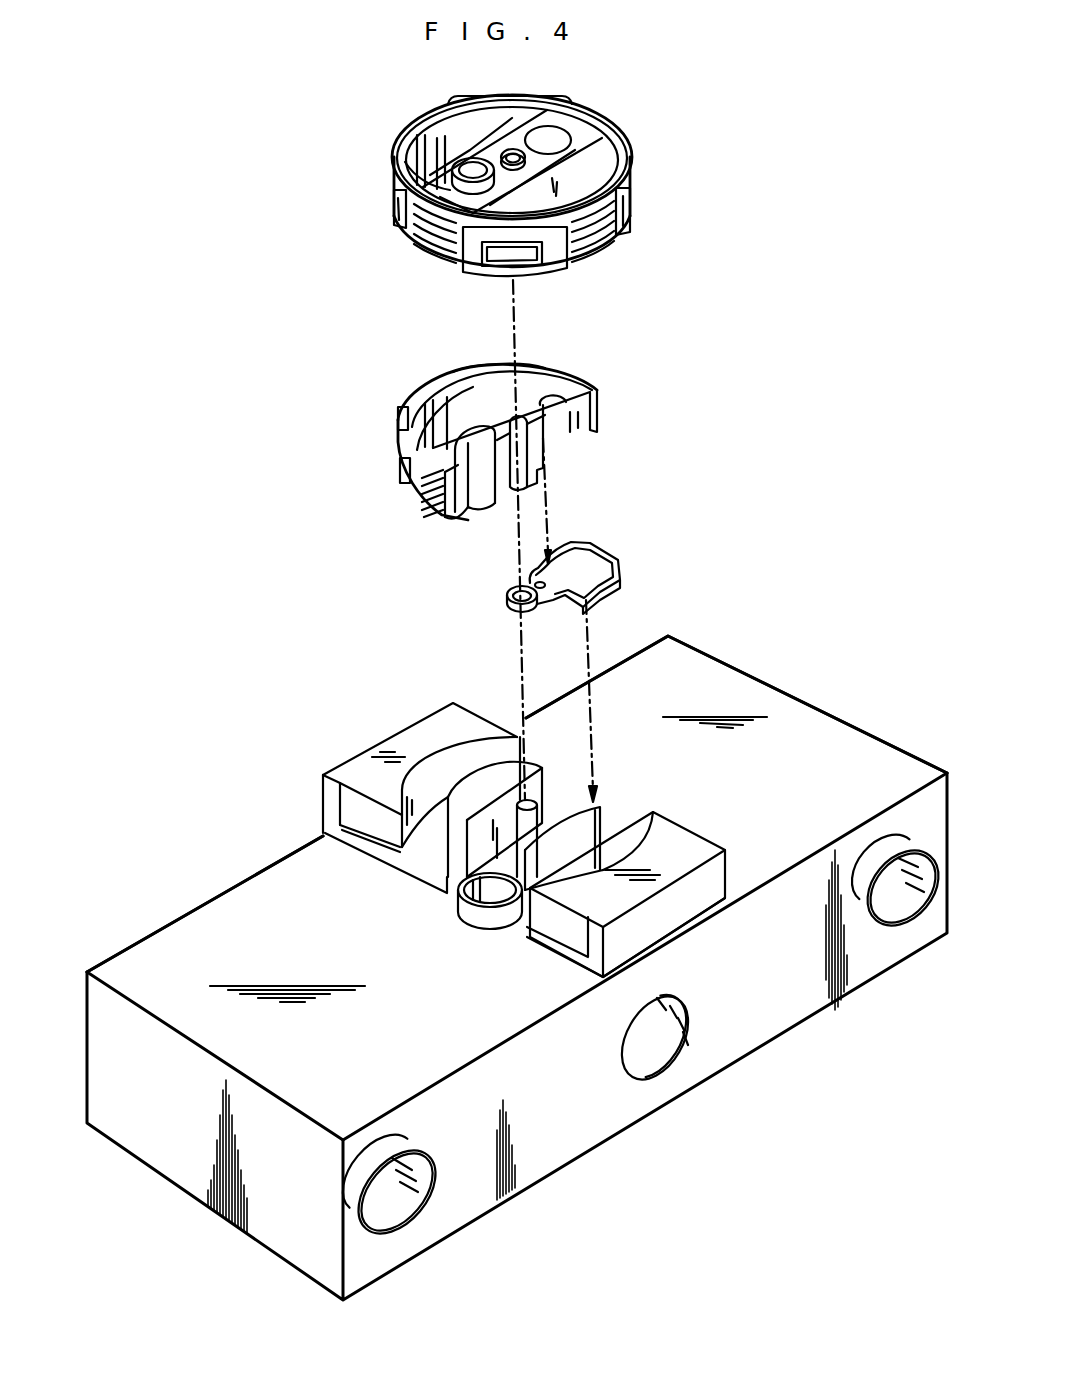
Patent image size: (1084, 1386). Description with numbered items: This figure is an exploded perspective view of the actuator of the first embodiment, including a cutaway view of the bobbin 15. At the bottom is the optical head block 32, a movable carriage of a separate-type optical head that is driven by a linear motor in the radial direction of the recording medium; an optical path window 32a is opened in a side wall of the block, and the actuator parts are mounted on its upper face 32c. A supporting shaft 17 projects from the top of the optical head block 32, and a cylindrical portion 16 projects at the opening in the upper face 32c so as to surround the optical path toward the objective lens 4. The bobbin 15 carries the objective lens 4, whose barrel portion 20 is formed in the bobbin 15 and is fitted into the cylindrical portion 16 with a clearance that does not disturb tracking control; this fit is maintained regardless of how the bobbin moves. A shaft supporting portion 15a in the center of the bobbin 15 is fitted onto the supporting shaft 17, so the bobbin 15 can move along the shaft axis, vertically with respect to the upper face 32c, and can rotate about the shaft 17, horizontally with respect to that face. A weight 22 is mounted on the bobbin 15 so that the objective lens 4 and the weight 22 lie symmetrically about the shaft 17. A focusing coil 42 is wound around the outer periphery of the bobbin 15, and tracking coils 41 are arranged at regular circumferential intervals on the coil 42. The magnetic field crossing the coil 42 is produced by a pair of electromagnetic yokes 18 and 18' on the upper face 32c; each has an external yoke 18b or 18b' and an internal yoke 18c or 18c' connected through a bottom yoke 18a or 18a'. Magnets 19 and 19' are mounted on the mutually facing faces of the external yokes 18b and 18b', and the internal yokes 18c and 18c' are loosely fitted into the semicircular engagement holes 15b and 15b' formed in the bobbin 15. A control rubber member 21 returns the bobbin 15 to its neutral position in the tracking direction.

The objective lens 4 is at (462, 192).
The bobbin 15 is at (600, 132).
The shaft supporting portion 15a is at (520, 150).
The semicircular engagement hole 15b is at (427, 263).
The semicircular engagement hole 15b' is at (602, 177).
The cylindrical portion 16 is at (475, 924).
The supporting shaft 17 is at (540, 802).
The electromagnetic yoke 18 is at (421, 797).
The bottom yoke 18a is at (386, 883).
The external yoke 18b is at (420, 777).
The internal yoke 18c is at (495, 769).
The electromagnetic yoke 18' is at (630, 917).
The bottom yoke 18a' is at (626, 985).
The external yoke 18b' is at (665, 894).
The internal yoke 18c' is at (604, 826).
The magnet 19 is at (420, 759).
The magnet 19' is at (669, 827).
The barrel portion 20 is at (450, 525).
The control rubber member 21 is at (585, 545).
The weight 22 is at (553, 140).
The optical head block 32 is at (797, 1000).
The optical path window 32a is at (676, 1078).
The upper face 32c is at (738, 668).
The tracking coil 41 is at (628, 222).
The focusing coil 42 is at (585, 240).